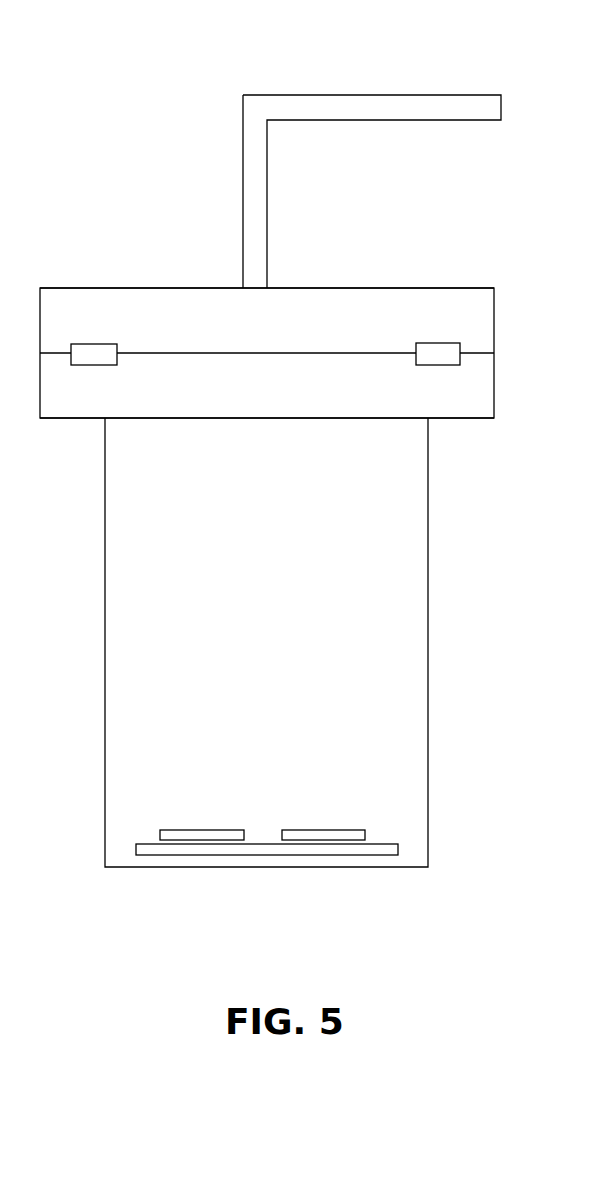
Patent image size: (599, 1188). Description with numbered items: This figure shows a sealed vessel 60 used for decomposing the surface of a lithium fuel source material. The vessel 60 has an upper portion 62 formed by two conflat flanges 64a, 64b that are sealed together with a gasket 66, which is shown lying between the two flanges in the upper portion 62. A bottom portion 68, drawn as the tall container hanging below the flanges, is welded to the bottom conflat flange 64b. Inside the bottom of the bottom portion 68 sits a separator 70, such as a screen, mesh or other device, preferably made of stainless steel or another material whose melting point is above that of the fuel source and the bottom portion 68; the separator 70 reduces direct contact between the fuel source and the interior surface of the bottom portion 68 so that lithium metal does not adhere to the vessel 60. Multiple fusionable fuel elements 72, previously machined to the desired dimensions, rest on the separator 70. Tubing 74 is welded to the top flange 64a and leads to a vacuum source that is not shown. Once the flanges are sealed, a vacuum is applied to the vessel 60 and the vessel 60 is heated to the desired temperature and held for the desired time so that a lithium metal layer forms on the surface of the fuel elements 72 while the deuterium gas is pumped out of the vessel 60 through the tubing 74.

The sealed vessel 60 is at (95, 112).
The upper portion 62 is at (362, 288).
The top conflat flange 64a is at (176, 288).
The bottom conflat flange 64b is at (80, 419).
The gasket 66 is at (447, 343).
The bottom portion 68 is at (428, 600).
The separator 70 is at (260, 855).
The fusionable fuel elements 72 is at (182, 830).
The tubing 74 is at (368, 96).